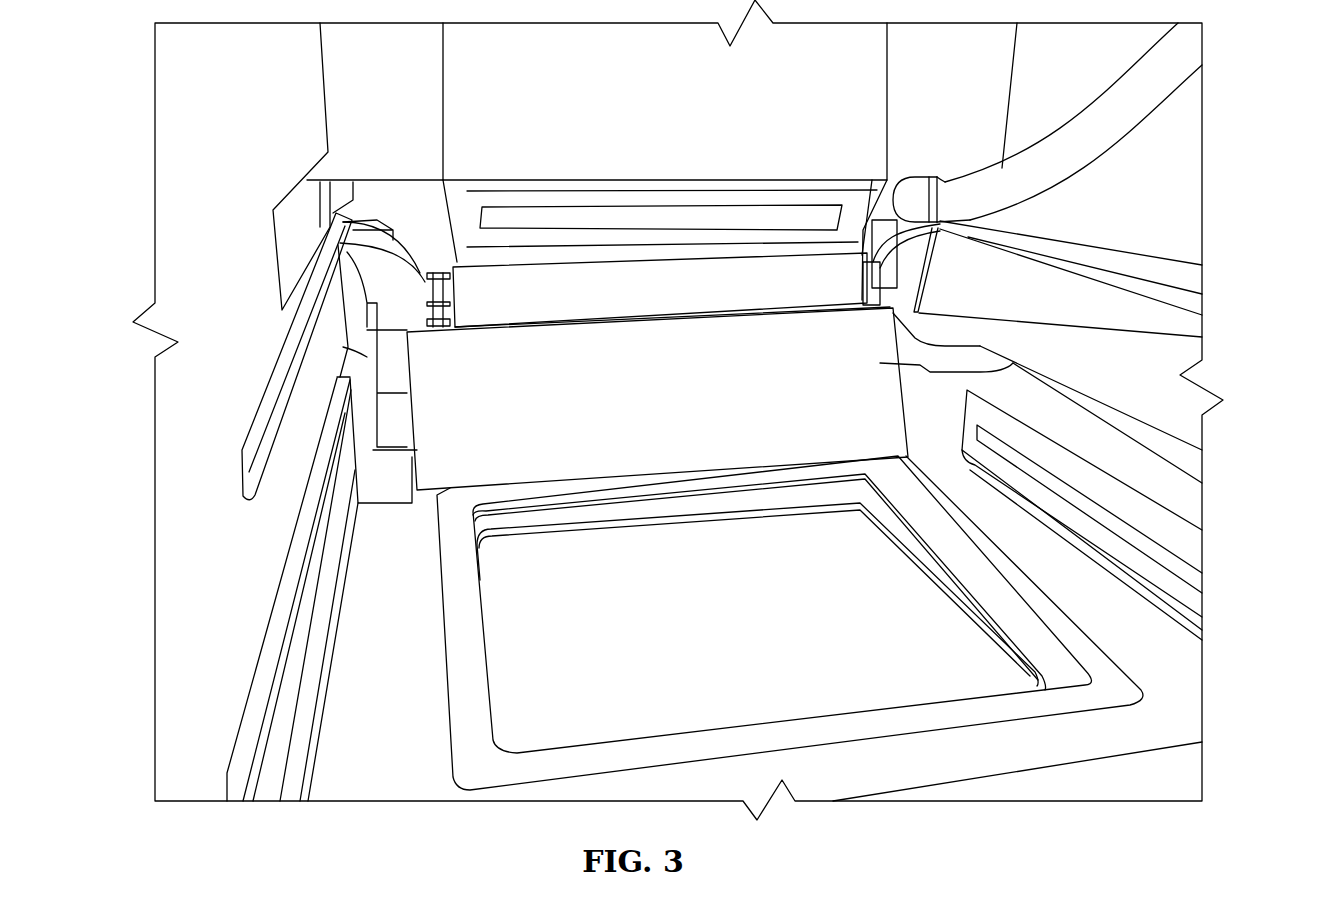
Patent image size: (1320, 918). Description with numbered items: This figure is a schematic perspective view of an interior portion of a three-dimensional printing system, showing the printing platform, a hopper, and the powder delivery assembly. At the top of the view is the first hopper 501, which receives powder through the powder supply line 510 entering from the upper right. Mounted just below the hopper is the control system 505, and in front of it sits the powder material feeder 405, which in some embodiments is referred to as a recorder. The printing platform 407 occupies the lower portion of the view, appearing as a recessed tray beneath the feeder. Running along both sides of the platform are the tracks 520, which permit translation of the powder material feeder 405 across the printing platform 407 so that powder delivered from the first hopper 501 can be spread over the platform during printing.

The first hopper 501 is at (697, 108).
The control system 505 is at (676, 305).
The powder material feeder 405 is at (671, 417).
The printing platform 407 is at (761, 643).
The powder supply line 510 is at (1117, 118).
The tracks 520 is at (290, 635).